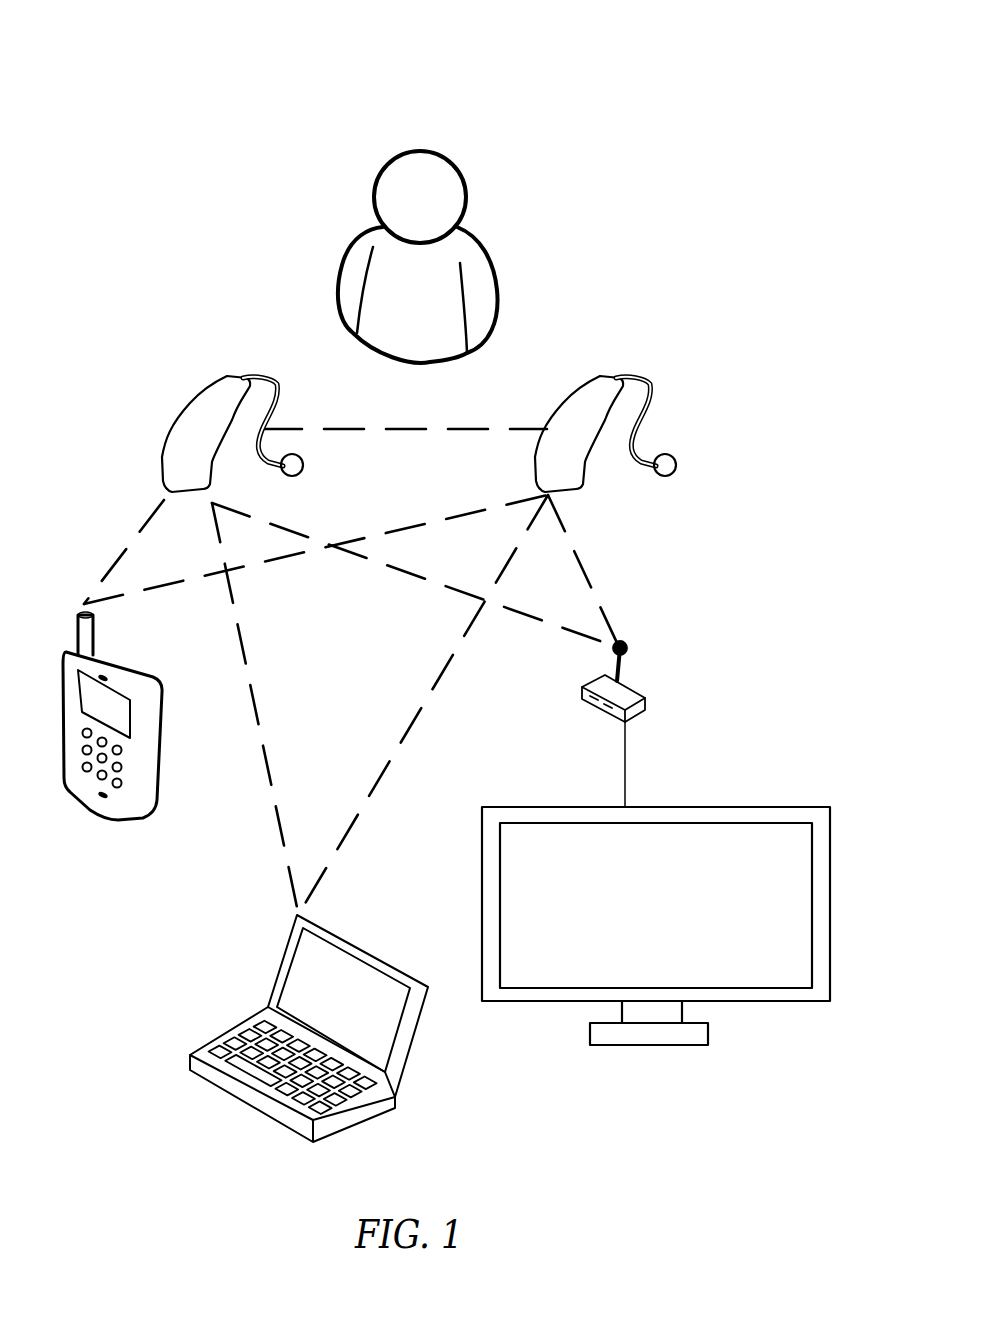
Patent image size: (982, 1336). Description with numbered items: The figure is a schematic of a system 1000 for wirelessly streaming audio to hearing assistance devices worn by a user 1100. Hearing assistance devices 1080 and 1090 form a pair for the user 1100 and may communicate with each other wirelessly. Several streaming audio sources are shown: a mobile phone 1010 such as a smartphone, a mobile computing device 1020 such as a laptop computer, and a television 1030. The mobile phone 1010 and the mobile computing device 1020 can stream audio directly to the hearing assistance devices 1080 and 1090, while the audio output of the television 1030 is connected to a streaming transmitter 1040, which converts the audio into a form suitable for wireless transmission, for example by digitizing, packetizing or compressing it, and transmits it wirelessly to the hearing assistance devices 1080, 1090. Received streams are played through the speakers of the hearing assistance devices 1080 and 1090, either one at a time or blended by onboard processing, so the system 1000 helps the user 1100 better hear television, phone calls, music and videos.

The system 1000 is at (698, 35).
The user 1100 is at (445, 153).
The hearing assistance device 1080 is at (222, 376).
The hearing assistance device 1090 is at (598, 376).
The mobile phone 1010 is at (132, 660).
The mobile computing device 1020 is at (365, 948).
The television 1030 is at (725, 807).
The streaming transmitter 1040 is at (638, 690).